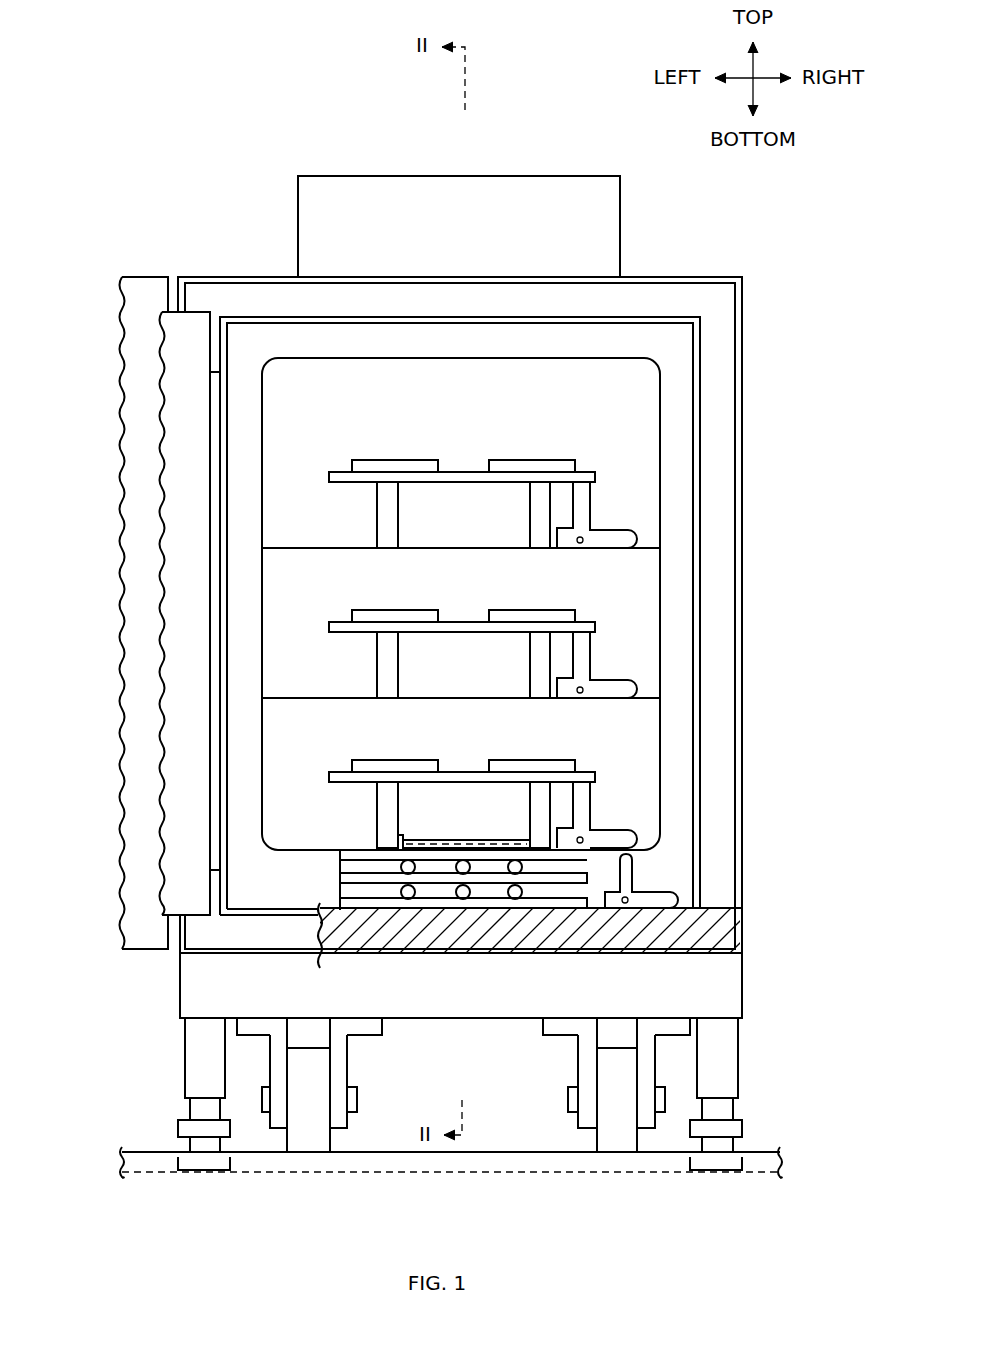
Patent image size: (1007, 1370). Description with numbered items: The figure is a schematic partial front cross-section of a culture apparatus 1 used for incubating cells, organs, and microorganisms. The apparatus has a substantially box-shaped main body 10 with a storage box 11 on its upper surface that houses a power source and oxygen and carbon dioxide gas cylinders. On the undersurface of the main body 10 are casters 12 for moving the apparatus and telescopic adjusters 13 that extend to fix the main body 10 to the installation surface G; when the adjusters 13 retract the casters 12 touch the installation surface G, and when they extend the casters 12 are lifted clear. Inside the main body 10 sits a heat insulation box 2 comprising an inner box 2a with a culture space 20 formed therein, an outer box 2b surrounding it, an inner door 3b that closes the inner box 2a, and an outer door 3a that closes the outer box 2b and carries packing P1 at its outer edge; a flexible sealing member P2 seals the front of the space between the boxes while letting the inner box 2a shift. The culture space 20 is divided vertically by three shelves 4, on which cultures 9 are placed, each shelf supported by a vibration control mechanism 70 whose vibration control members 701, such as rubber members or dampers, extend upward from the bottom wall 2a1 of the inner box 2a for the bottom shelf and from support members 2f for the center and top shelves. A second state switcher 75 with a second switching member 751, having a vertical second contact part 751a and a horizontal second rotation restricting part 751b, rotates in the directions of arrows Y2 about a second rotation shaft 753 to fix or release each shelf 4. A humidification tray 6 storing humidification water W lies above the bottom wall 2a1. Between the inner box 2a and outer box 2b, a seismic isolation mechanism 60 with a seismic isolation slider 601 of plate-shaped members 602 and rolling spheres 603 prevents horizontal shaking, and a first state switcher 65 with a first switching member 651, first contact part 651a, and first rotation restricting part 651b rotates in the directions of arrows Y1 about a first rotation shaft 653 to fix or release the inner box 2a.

The culture apparatus 1 is at (116, 86).
The heat insulation box 2 is at (707, 273).
The inner box 2a is at (349, 542).
The bottom wall 2a1 is at (262, 836).
The outer box 2b is at (398, 277).
The support member 2f is at (442, 548).
The outer door 3a is at (140, 277).
The inner door 3b is at (195, 312).
The shelf 4 is at (450, 472).
The humidification tray 6 is at (400, 838).
The substrate 9 is at (408, 460).
The main body 10 is at (745, 312).
The storage box 11 is at (550, 176).
The caster 12 is at (254, 1065).
The adjuster 13 is at (176, 1084).
The culture space 20 is at (456, 390).
The seismic isolation mechanism 60 is at (420, 957).
The seismic isolation slider 601 is at (328, 897).
The plate-shaped member 602 is at (450, 903).
The sphere 603 is at (514, 895).
The first state switcher 65 is at (659, 929).
The first switching member 651 is at (680, 887).
The first contact part 651a is at (632, 876).
The first rotation restricting part 651b is at (605, 903).
The first rotation shaft 653 is at (624, 905).
The vibration control mechanism 70 is at (439, 636).
The vibration control member 701 is at (377, 540).
The second state switcher 75 is at (635, 644).
The second switching member 751 is at (640, 521).
The second contact part 751a is at (600, 486).
The second rotation restricting part 751b is at (557, 540).
The second rotation shaft 753 is at (582, 546).
The installation surface G is at (158, 1167).
The packing P1 is at (235, 300).
The sealing member P2 is at (634, 337).
The humidification water W is at (500, 840).
The arrows Y1 is at (662, 868).
The arrows Y2 is at (618, 504).